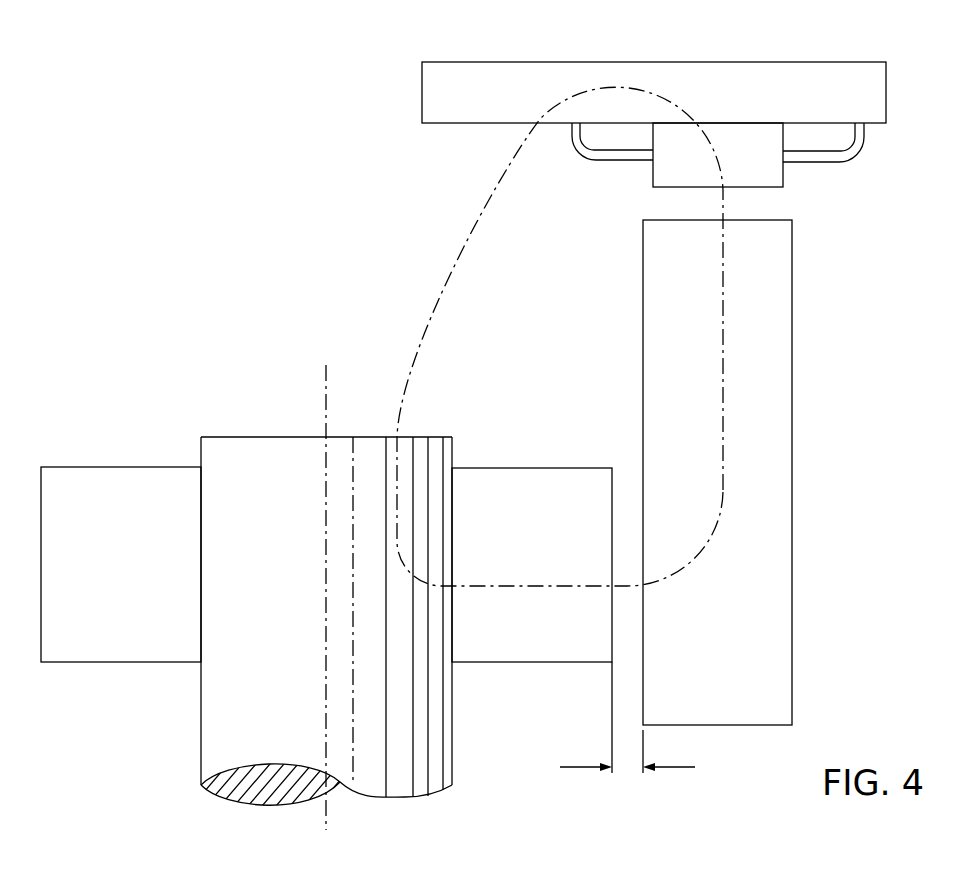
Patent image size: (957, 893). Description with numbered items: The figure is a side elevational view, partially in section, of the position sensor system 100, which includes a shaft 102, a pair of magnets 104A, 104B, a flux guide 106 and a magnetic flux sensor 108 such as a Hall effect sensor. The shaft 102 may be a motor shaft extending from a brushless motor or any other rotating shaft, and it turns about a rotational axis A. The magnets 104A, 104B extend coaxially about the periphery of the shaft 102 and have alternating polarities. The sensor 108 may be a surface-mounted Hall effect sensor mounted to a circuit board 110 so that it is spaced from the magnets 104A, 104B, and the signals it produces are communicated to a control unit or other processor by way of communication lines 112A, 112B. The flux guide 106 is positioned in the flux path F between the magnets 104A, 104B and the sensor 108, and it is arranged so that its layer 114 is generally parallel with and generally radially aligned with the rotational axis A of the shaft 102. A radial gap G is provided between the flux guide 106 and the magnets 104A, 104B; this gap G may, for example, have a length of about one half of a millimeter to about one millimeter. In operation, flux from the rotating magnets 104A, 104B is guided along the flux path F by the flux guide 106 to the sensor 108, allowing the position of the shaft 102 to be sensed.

The position sensor system 100 is at (304, 183).
The shaft 102 is at (215, 720).
The magnet 104A is at (96, 483).
The magnet 104B is at (530, 480).
The flux guide 106 is at (785, 415).
The magnetic flux sensor 108 is at (778, 168).
The circuit board 110 is at (878, 104).
The communication line 112A is at (597, 151).
The communication line 112B is at (850, 148).
The layer 114 is at (731, 647).
The rotational axis A is at (328, 368).
The flux path F is at (447, 285).
The radial gap G is at (633, 766).